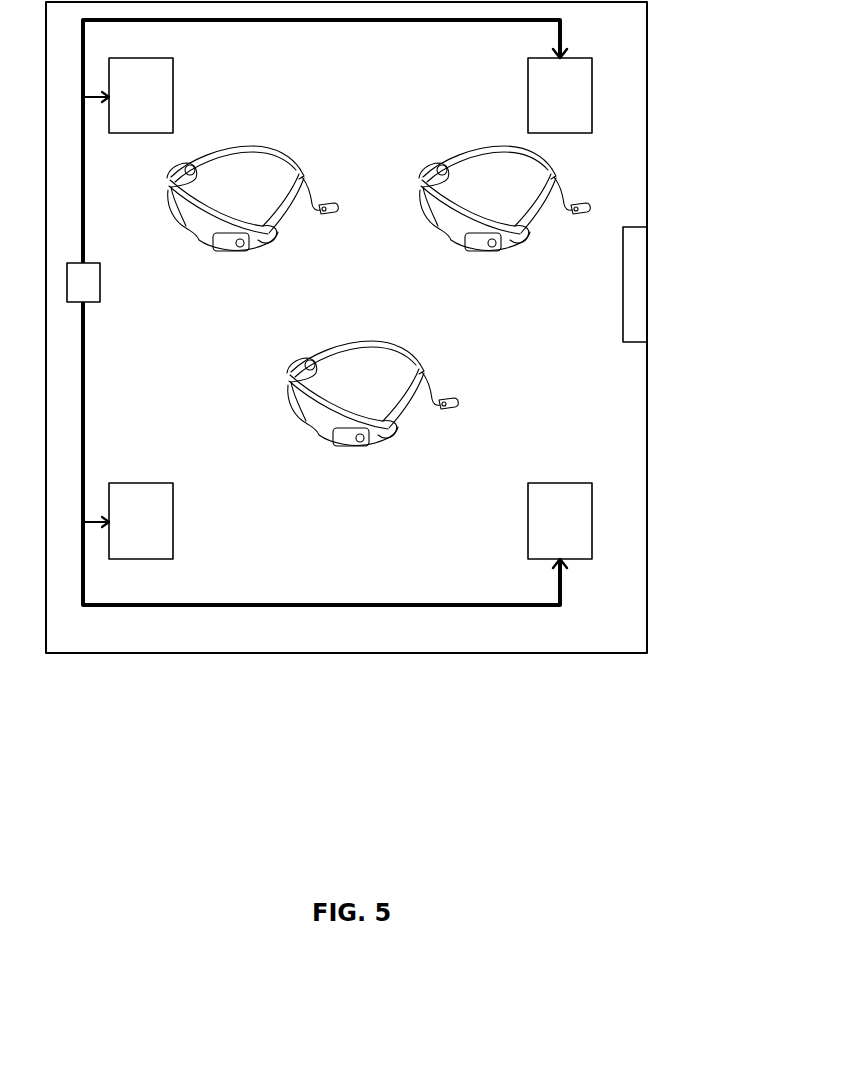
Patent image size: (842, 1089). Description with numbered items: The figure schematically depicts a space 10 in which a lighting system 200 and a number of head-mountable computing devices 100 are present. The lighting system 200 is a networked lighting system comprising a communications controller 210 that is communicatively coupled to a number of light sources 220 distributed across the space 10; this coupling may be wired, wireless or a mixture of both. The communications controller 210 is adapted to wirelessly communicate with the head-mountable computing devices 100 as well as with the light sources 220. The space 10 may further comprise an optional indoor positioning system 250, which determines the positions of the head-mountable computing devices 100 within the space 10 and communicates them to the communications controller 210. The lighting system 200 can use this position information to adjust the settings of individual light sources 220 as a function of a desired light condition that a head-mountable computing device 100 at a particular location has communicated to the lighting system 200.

The space 10 is at (498, 653).
The lighting system 200 is at (360, 709).
The communications controller 210 is at (100, 286).
The light sources 220 is at (173, 97).
The indoor positioning system 250 is at (636, 240).
The head-mountable computing device 100 is at (211, 255).